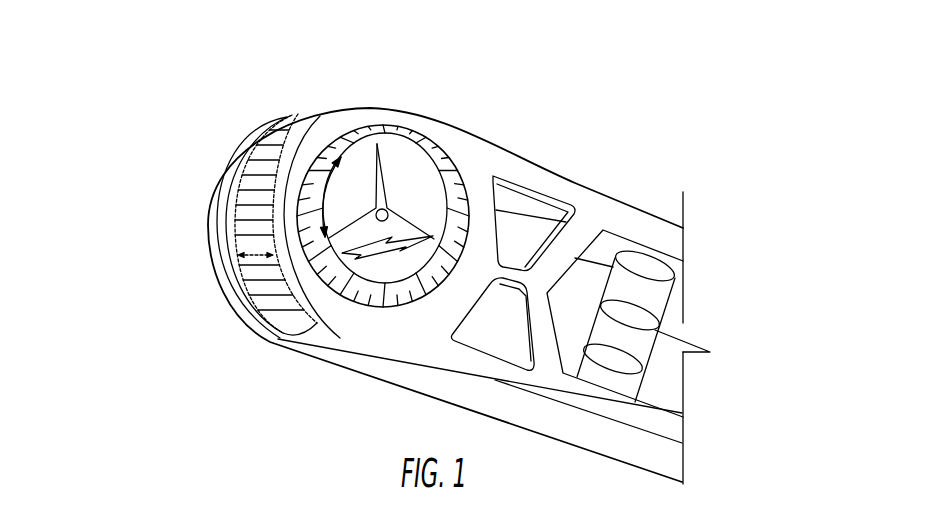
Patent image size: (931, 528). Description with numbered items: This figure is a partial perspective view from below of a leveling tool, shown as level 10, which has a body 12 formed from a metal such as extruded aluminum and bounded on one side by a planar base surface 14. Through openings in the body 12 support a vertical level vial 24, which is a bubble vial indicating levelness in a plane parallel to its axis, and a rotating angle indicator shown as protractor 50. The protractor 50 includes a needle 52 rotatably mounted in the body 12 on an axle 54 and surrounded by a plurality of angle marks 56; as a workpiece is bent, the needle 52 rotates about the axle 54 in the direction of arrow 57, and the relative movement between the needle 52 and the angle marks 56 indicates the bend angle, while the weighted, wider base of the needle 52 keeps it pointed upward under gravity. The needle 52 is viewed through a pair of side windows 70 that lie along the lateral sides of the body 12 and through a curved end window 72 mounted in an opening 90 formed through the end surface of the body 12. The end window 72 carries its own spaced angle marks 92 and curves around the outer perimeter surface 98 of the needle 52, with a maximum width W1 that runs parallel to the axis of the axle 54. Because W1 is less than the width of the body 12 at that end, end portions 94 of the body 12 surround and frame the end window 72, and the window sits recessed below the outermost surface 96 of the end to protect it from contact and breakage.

The level 10 is at (722, 163).
The body 12 is at (595, 212).
The planar base surface 14 is at (607, 440).
The vertical level vial 24 is at (637, 348).
The protractor 50 is at (432, 158).
The needle 52 is at (410, 222).
The axle 54 is at (382, 216).
The angle marks 56 is at (308, 178).
The arrow 57 is at (312, 207).
The side windows 70 is at (330, 245).
The end window 72 is at (330, 128).
The opening 90 is at (268, 317).
The angle marks 92 is at (247, 208).
The end portions 94 is at (270, 212).
The outermost surface 96 is at (213, 191).
The outer perimeter surface 98 is at (387, 285).
The maximum width W1 is at (250, 258).